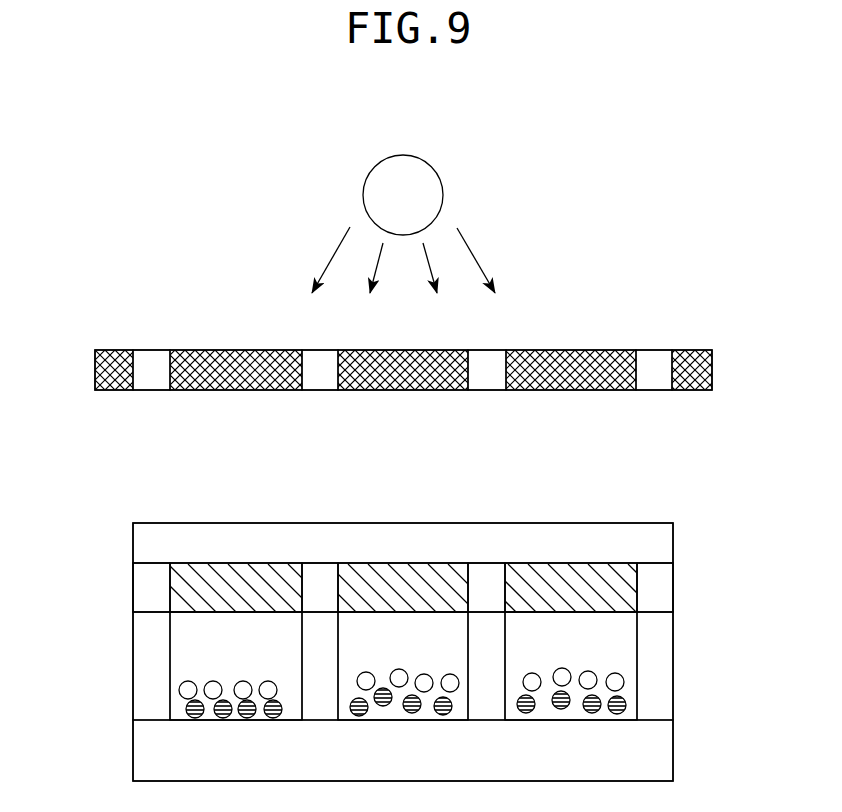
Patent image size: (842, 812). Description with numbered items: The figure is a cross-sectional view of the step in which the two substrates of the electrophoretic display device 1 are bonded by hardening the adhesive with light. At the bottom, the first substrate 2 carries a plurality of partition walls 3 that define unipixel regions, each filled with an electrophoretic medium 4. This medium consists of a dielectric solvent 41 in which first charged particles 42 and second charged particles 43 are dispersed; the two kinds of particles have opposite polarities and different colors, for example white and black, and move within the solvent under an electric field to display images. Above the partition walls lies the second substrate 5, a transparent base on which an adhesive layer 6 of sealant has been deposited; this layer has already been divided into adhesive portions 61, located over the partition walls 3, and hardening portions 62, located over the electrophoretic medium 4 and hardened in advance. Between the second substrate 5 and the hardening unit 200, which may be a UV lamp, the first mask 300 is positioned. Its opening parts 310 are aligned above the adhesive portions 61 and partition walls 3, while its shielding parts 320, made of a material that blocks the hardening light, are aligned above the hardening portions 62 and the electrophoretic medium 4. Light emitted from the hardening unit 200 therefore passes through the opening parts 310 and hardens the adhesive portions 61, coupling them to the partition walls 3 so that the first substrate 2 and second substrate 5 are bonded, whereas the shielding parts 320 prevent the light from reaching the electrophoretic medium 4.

The electrophoretic display device 1 is at (94, 491).
The first substrate 2 is at (142, 742).
The partition walls 3 is at (142, 686).
The electrophoretic medium 4 is at (460, 655).
The dielectric solvent 41 is at (615, 625).
The first charged particles 42 is at (616, 682).
The second charged particles 43 is at (450, 703).
The second substrate 5 is at (145, 545).
The adhesive layer 6 is at (353, 608).
The adhesive portions 61 is at (153, 585).
The hardening portions 62 is at (218, 602).
The hardening unit 200 is at (424, 182).
The first mask 300 is at (417, 332).
The opening parts 310 is at (653, 357).
The shielding parts 320 is at (558, 357).